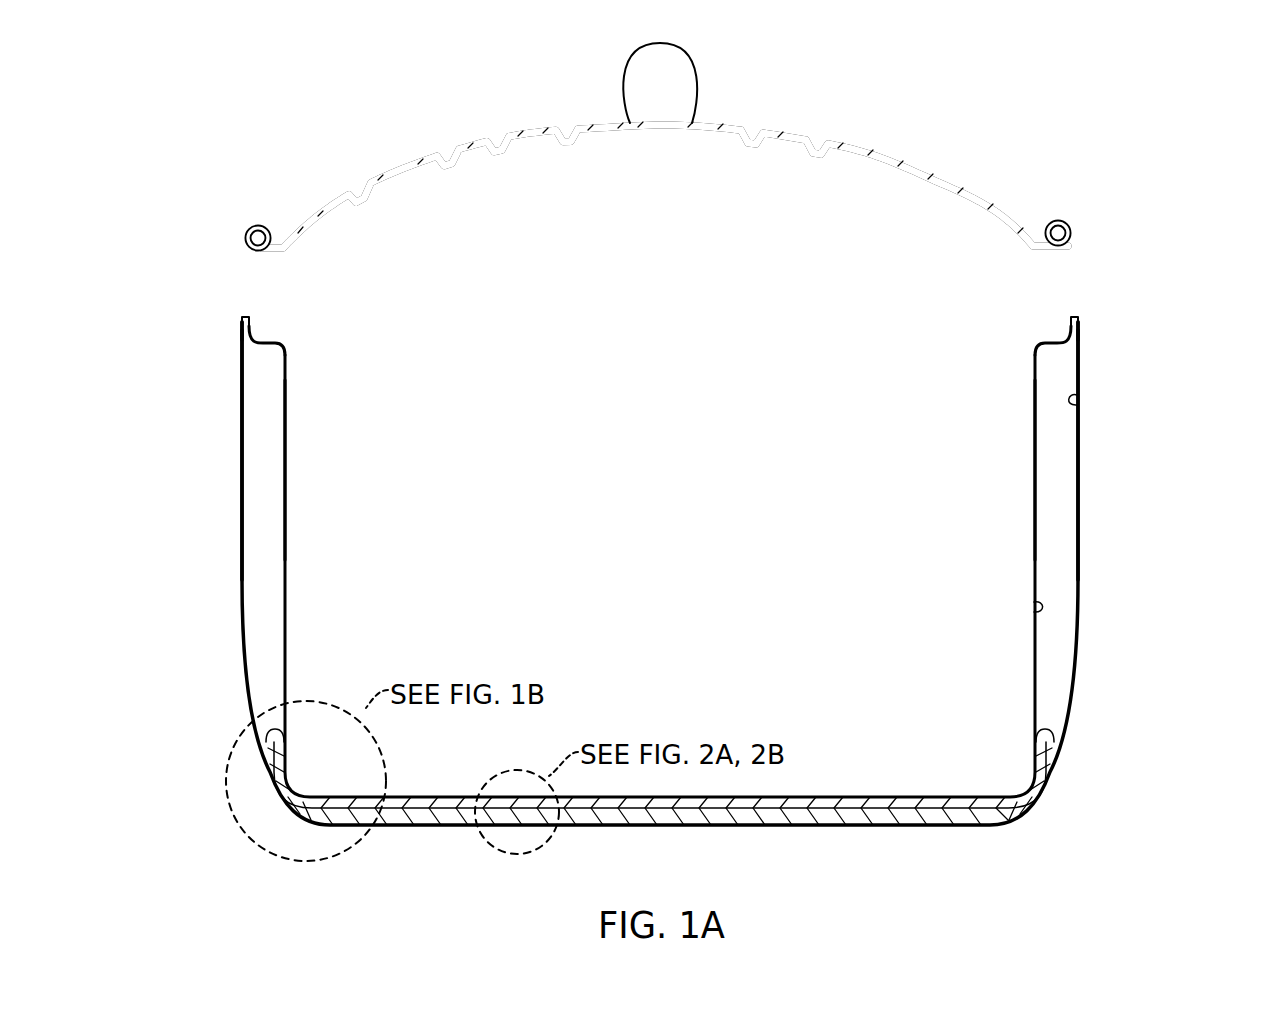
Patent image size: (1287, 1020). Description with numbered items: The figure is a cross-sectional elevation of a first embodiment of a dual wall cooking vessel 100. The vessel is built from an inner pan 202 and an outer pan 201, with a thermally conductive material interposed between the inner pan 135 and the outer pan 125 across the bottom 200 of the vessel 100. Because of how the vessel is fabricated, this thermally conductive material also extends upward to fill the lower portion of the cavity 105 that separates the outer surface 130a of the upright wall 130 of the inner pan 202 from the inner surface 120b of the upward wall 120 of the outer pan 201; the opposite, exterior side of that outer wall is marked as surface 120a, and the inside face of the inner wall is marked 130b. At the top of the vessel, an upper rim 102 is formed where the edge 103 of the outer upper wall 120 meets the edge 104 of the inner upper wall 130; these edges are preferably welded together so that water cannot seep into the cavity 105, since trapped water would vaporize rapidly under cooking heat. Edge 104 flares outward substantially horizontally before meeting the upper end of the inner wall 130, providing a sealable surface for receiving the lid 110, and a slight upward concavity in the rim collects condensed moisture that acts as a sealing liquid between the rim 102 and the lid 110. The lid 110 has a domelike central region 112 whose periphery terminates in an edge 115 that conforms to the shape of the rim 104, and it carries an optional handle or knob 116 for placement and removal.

The dual wall cooking vessel 100 is at (685, 573).
The upper rim 102 is at (250, 323).
The edge of the outer upper wall 103 is at (241, 330).
The edge of the inner upper wall 104 is at (265, 343).
The cavity 105 is at (277, 550).
The lid 110 is at (693, 145).
The domelike central region 112 is at (868, 150).
The edge of the lid 115 is at (1073, 236).
The lid knob 116 is at (697, 74).
The upward wall of the outer pan 120 is at (716, 573).
The outer wall surface 120a is at (1082, 460).
The inner surface of the upward wall of the outer pan 120b is at (1079, 402).
The outer pan 125 is at (774, 827).
The upright wall of the inner pan 130 is at (664, 576).
The outer surface of the upright wall 130a is at (1034, 615).
The inner wall surface 130b is at (1032, 471).
The inner pan 135 is at (870, 796).
The bottom of vessel 200 is at (660, 804).
The outer pan 201 is at (330, 482).
The inner pan 202 is at (202, 467).